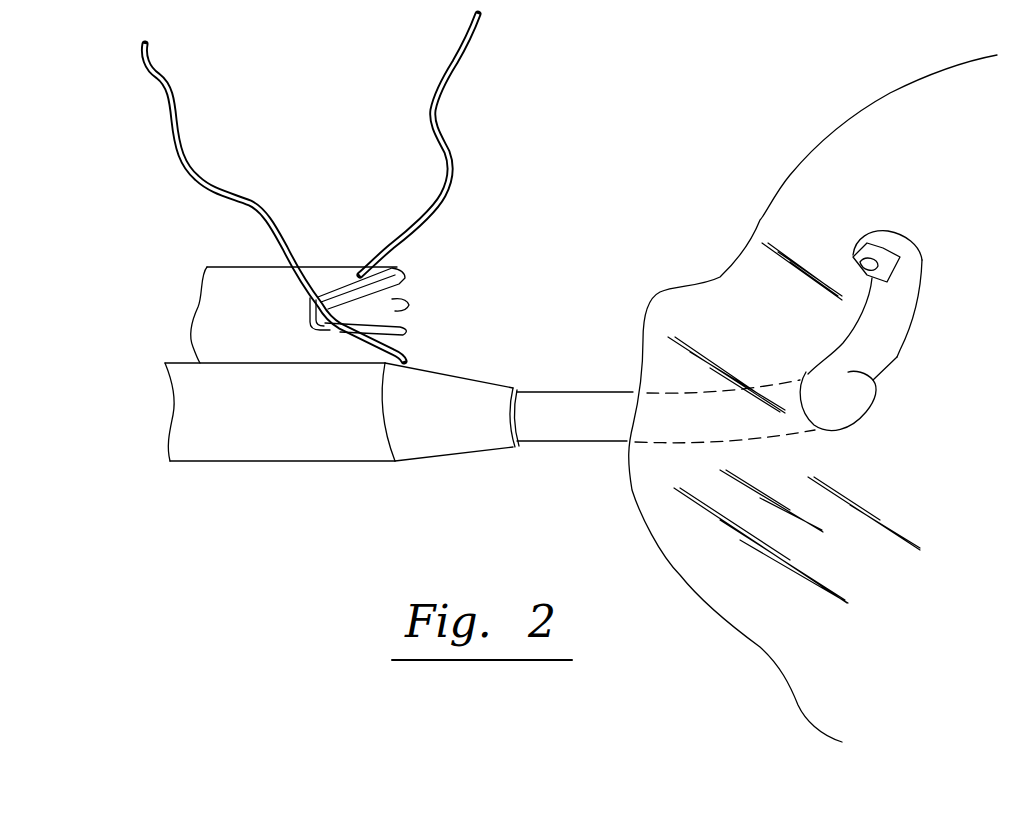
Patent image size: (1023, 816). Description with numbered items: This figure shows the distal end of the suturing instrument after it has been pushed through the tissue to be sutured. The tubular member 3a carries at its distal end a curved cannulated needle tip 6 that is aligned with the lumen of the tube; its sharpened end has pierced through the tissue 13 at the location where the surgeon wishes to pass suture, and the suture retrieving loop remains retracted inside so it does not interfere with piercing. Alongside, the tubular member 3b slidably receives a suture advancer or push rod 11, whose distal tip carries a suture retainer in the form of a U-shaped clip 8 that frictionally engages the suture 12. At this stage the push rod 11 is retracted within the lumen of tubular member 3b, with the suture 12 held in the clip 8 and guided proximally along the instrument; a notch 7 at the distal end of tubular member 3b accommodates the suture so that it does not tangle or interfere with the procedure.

The suture 12 is at (463, 58).
The tubular member 3b is at (318, 268).
The notch 7 is at (360, 267).
The U-shaped clip 8 is at (403, 308).
The push rod 11 is at (404, 334).
The tubular member 3a is at (343, 458).
The tissue 13 is at (727, 622).
The needle tip 6 is at (925, 250).